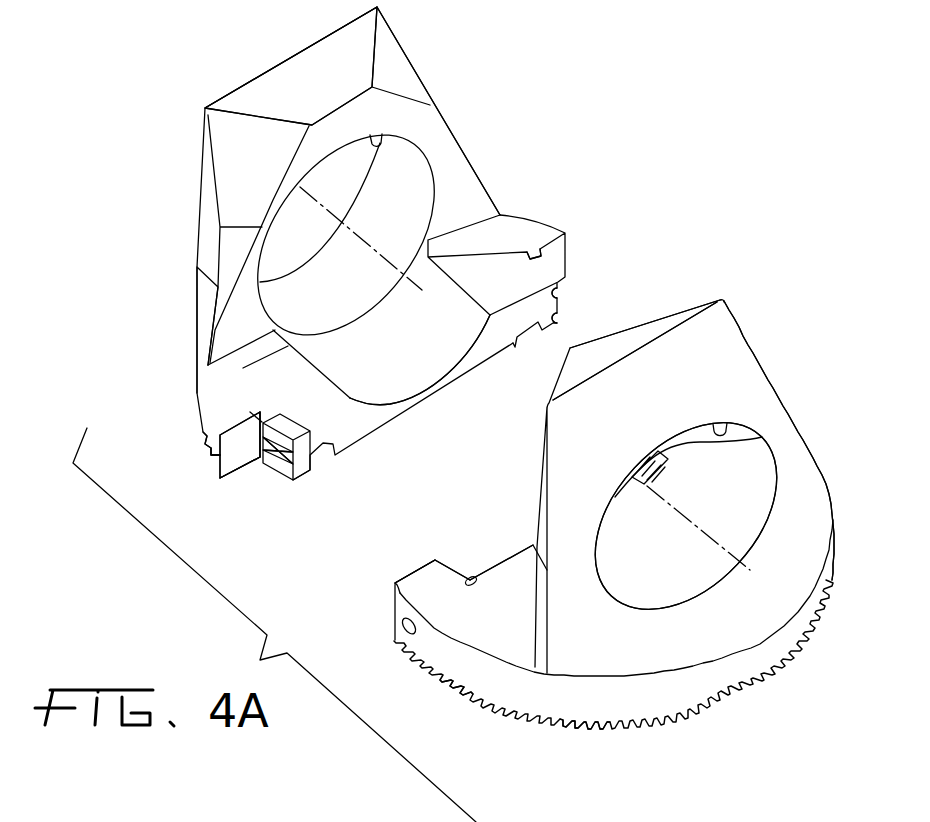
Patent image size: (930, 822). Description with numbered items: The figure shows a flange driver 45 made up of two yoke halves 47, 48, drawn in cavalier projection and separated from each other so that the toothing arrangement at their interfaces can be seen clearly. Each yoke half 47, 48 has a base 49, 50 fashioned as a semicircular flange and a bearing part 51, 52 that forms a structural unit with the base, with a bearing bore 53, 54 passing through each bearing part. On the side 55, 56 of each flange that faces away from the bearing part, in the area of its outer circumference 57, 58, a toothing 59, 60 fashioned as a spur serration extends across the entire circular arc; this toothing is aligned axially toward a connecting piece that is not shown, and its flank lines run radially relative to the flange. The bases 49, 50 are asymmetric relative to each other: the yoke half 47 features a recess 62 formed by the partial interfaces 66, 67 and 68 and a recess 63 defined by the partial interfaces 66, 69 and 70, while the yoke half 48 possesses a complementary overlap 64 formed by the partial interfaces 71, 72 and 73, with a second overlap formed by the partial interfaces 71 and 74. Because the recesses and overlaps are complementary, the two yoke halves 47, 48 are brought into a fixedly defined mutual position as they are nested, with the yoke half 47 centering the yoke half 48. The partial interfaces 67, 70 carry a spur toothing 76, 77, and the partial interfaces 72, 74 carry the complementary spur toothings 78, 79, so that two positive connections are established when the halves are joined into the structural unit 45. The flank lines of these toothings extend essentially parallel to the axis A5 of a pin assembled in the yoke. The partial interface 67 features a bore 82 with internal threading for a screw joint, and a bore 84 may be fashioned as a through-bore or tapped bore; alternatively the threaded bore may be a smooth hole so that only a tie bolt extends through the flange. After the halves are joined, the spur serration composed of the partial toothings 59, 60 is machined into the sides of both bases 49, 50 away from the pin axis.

The flange driver 45 is at (600, 103).
The yoke half 47 is at (453, 80).
The yoke half 48 is at (692, 293).
The base 49 is at (222, 400).
The base 50 is at (395, 584).
The bearing part 51 is at (302, 62).
The bearing part 52 is at (645, 313).
The bearing bore 53 is at (381, 138).
The bearing bore 54 is at (728, 423).
The side away from the bearing part 55 is at (692, 714).
The side away from the bearing part 56 is at (371, 437).
The outer circumference 57 is at (587, 705).
The outer circumference 58 is at (219, 452).
The toothing 59 is at (452, 693).
The toothing 60 is at (200, 435).
The recess 62 is at (262, 487).
The recess 63 is at (571, 286).
The overlap 64 is at (452, 553).
The partial interface 66 is at (440, 387).
The partial interface 67 is at (262, 413).
The partial interface 68 is at (237, 462).
The partial interface 69 is at (558, 247).
The partial interface 70 is at (536, 252).
The partial interface 71 is at (496, 563).
The partial interface 72 is at (480, 583).
The partial interface 73 is at (411, 576).
The partial interface 74 is at (762, 437).
The spur toothing 76 is at (280, 482).
The spur toothing 77 is at (560, 306).
The spur toothing 78 is at (440, 560).
The spur toothing 79 is at (637, 482).
The bore 82 is at (268, 421).
The bore 84 is at (402, 633).
The axis of a pin A5 is at (340, 217).